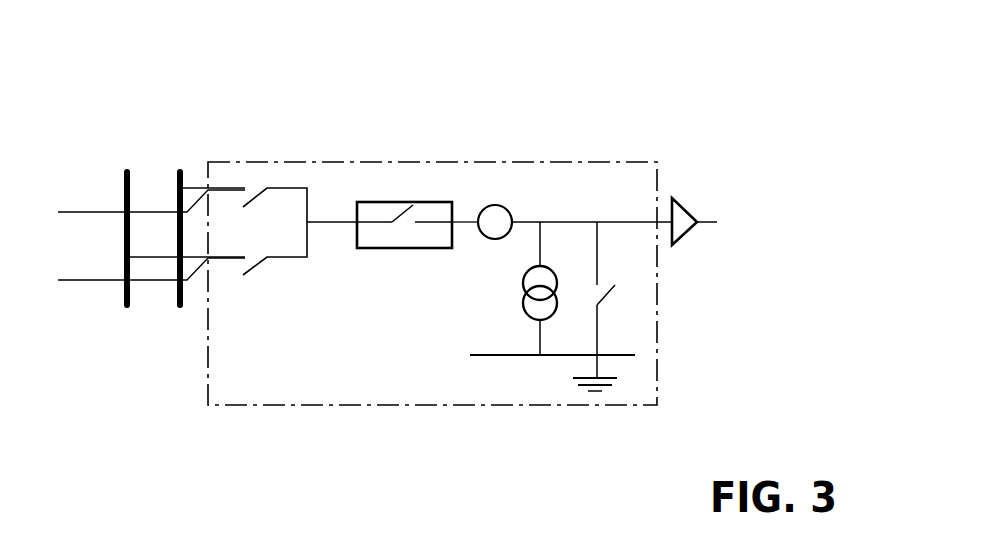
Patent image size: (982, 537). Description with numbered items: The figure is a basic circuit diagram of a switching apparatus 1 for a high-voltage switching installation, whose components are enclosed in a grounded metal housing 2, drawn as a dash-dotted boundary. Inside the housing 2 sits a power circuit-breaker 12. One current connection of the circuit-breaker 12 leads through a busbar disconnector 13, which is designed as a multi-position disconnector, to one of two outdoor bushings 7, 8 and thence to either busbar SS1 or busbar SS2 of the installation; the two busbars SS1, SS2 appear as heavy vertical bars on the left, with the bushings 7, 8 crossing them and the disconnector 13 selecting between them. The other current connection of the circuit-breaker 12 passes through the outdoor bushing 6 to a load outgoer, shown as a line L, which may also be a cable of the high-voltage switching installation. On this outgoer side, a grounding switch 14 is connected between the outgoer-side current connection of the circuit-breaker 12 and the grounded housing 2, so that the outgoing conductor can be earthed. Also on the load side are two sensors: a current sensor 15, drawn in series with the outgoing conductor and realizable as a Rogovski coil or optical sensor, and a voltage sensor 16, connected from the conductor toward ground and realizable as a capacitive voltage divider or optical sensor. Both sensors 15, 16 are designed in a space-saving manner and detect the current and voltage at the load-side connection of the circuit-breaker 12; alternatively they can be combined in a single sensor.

The switchgear unit 1 is at (420, 333).
The metal housing 2 is at (377, 405).
The outdoor bushing 6 is at (654, 218).
The outdoor bushing 7 is at (138, 208).
The outdoor bushing 8 is at (138, 276).
The power circuit-breaker 12 is at (405, 202).
The busbar disconnector 13 is at (282, 220).
The grounding switch 14 is at (612, 300).
The current sensor 15 is at (495, 222).
The voltage sensor 16 is at (535, 308).
The line L is at (698, 218).
The busbar SS1 is at (127, 167).
The busbar SS2 is at (180, 167).